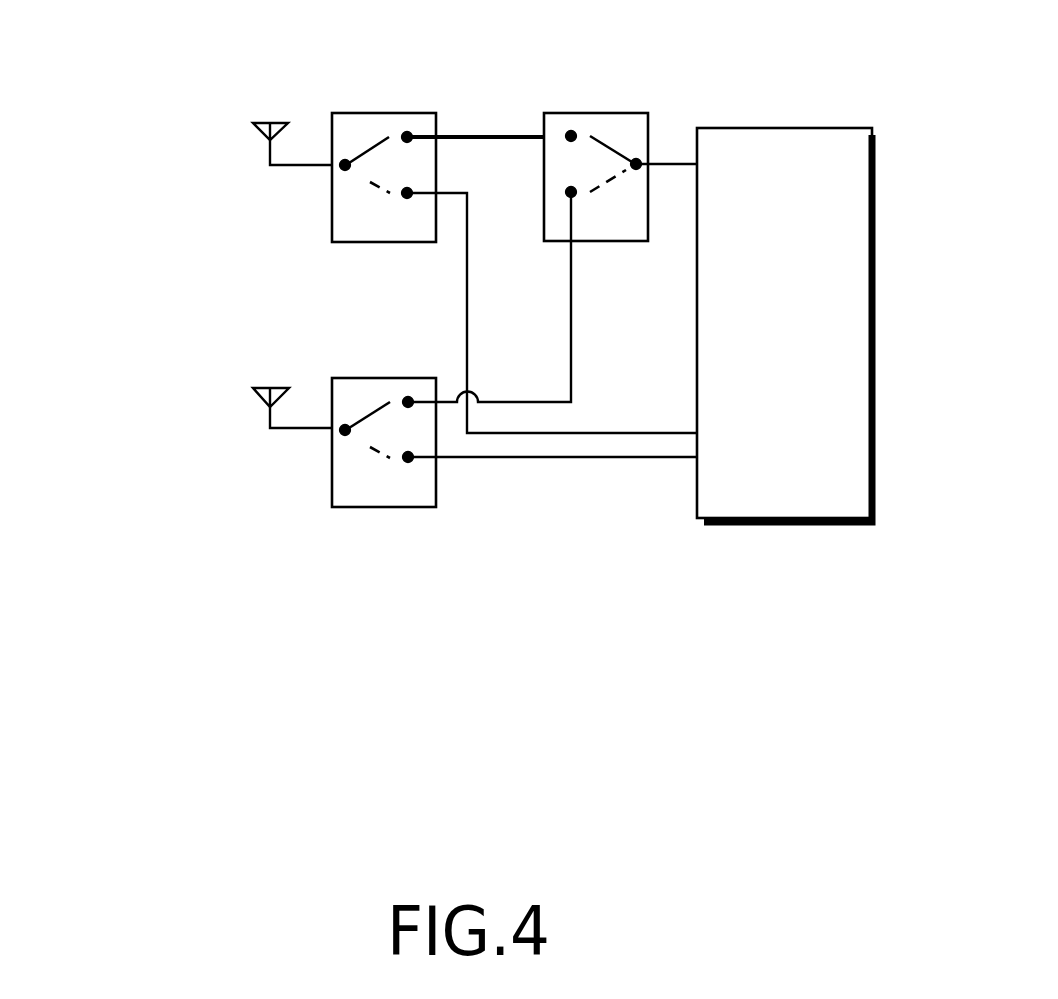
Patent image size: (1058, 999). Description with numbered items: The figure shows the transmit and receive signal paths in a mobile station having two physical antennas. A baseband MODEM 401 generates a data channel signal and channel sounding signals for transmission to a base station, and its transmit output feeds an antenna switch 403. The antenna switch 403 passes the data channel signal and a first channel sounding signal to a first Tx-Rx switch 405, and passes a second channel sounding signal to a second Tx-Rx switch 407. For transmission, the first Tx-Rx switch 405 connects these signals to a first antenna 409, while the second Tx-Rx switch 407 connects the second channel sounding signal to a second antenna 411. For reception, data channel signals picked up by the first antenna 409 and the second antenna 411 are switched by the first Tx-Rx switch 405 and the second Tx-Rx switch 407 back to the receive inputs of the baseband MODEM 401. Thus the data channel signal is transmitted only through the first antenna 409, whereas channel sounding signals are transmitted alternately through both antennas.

The baseband MODEM 401 is at (881, 210).
The antenna switch 403 is at (594, 62).
The first Tx-Rx switch 405 is at (381, 112).
The second Tx-Rx switch 407 is at (381, 377).
The first antenna 409 is at (254, 122).
The second antenna 411 is at (254, 387).